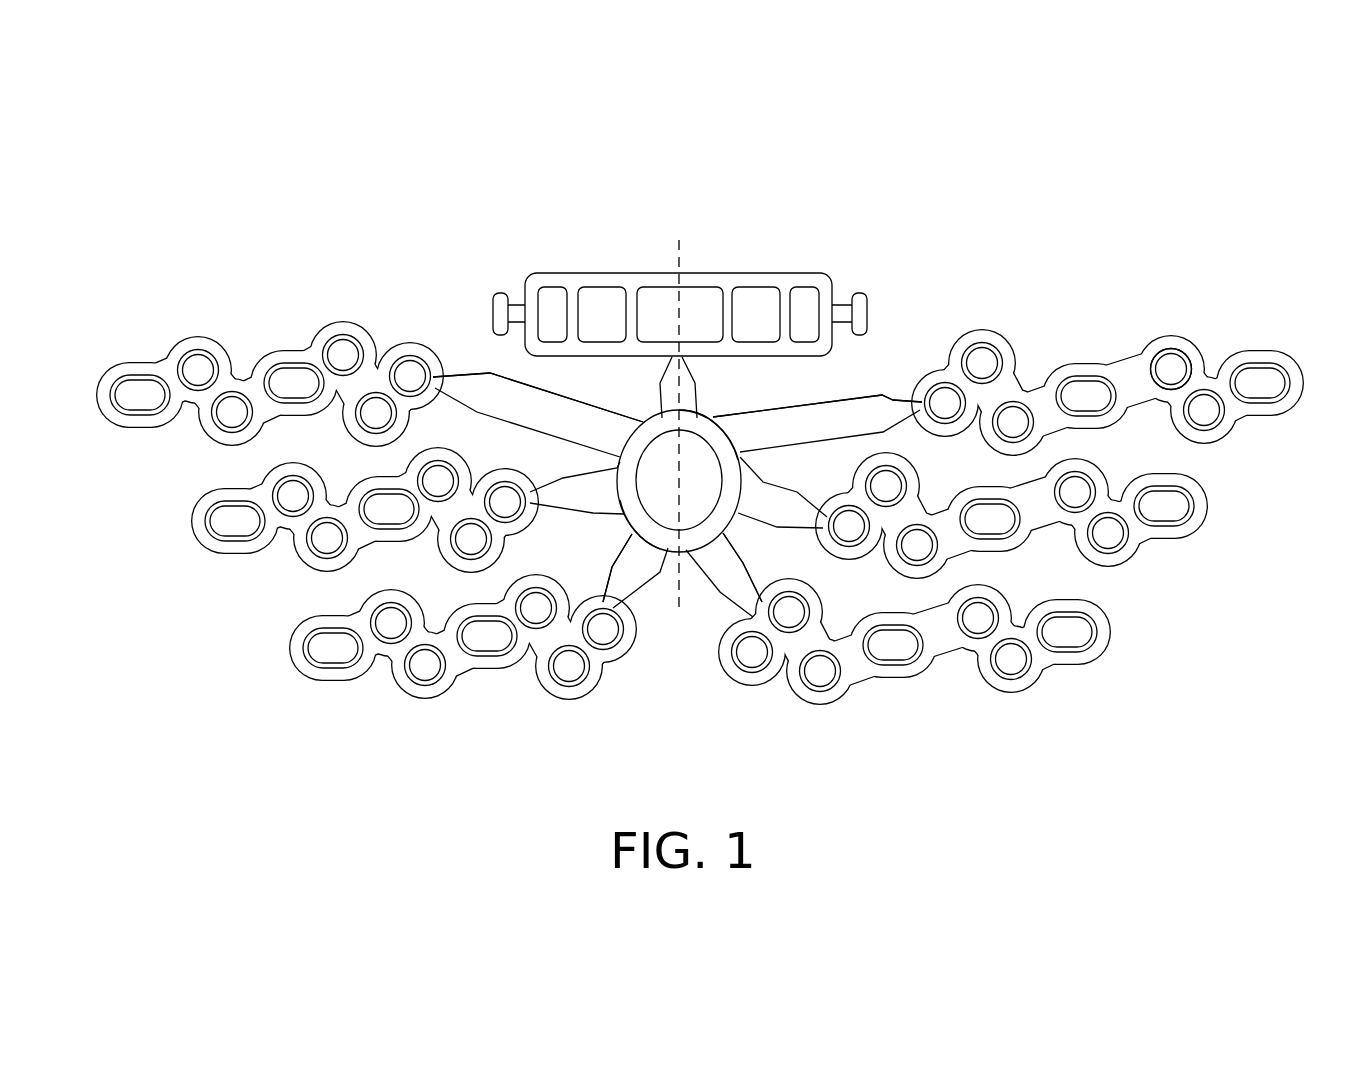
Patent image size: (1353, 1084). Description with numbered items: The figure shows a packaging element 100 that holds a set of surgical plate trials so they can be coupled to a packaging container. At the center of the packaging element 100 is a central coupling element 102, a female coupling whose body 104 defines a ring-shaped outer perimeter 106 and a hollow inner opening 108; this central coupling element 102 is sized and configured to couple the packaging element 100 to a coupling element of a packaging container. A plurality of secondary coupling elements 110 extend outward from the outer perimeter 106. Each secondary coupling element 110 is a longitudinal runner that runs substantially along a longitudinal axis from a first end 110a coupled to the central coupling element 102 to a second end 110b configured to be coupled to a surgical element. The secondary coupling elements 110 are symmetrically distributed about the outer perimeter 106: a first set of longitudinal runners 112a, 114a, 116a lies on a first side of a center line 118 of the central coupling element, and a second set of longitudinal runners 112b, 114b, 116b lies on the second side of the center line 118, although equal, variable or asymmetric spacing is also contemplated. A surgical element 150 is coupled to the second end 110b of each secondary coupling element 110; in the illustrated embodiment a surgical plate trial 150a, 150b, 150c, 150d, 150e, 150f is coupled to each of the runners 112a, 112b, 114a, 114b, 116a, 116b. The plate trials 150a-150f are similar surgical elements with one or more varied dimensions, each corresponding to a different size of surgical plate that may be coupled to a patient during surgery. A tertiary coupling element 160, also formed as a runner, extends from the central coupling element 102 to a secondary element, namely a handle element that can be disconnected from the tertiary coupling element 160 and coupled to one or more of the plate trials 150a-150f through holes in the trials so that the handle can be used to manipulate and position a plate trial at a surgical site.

The packaging element 100 is at (1040, 198).
The central coupling element 102 is at (668, 553).
The body 104 is at (697, 428).
The outer perimeter 106 is at (627, 527).
The hollow inner opening 108 is at (700, 497).
The secondary coupling elements 110 is at (696, 602).
The first end 110a is at (455, 344).
The second end 110b is at (641, 412).
The longitudinal runner 112a is at (487, 373).
The longitudinal runner 112b is at (888, 405).
The longitudinal runner 114a is at (560, 483).
The longitudinal runner 114b is at (760, 495).
The longitudinal runner 116a is at (623, 590).
The longitudinal runner 116b is at (727, 583).
The center line 118 is at (681, 240).
The surgical element 150 is at (1240, 303).
The surgical plate trial 150a is at (340, 320).
The surgical plate trial 150b is at (272, 547).
The surgical plate trial 150c is at (362, 677).
The surgical plate trial 150d is at (1015, 695).
The surgical plate trial 150e is at (1122, 565).
The surgical plate trial 150f is at (1223, 437).
The tertiary coupling element 160 is at (687, 382).